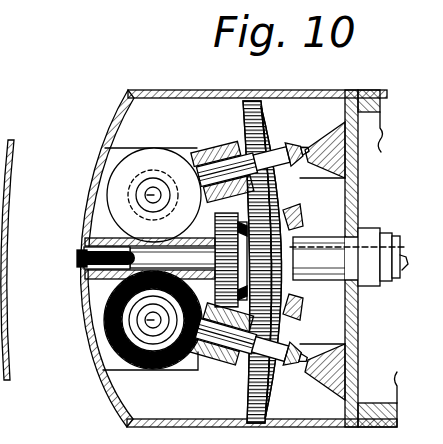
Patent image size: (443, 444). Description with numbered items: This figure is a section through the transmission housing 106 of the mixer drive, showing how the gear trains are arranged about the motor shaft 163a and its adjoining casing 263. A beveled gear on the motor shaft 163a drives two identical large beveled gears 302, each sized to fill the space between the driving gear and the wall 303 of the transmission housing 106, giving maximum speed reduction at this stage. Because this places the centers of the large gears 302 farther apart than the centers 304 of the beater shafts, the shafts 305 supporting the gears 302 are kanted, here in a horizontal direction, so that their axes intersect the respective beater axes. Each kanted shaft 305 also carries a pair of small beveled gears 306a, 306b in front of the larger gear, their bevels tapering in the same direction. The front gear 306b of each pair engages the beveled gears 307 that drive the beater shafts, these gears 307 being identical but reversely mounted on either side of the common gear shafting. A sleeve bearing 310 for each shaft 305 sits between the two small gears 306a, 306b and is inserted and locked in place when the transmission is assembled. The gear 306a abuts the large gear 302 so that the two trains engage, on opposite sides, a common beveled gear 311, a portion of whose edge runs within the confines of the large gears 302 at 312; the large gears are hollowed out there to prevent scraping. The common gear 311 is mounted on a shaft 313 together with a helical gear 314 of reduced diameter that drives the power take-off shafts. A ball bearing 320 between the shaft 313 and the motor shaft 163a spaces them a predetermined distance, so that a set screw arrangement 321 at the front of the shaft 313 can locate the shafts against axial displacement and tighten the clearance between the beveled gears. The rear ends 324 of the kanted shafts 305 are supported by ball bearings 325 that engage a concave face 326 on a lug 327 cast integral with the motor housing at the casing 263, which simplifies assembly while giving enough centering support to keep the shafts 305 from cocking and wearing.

The transmission housing 106 is at (162, 96).
The casing 263 is at (360, 90).
The wall of the transmission housing 303 is at (248, 99).
The beveled gears 302 is at (268, 127).
The centers of the beater shafts 304 is at (150, 195).
The shafts 305 is at (187, 152).
The small beveled gear 306a is at (258, 152).
The front beveled gear 306b is at (210, 176).
The beveled gears 307 is at (128, 171).
The sleeve bearing 310 is at (289, 198).
The common beveled gear 311 is at (299, 290).
The portion within the large beveled gears 312 is at (291, 219).
The shaft 313 is at (172, 258).
The helical gear 314 is at (172, 259).
The ball bearing 320 is at (5, 373).
The set screw arrangement 321 is at (93, 237).
The rear ends of the kanted shafts 324 is at (291, 153).
The ball bearings 325 is at (383, 173).
The concave face 326 is at (289, 173).
The lug 327 is at (346, 176).
The shaft extension 163a is at (391, 335).